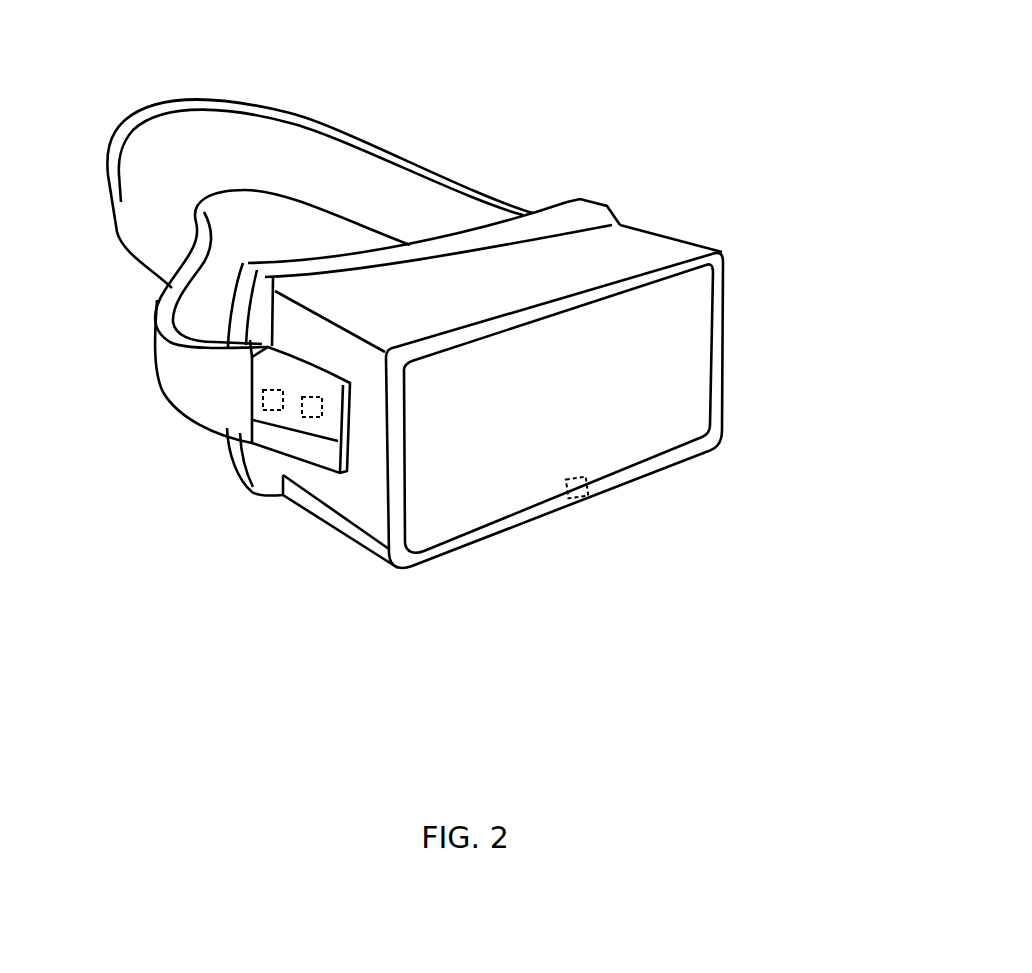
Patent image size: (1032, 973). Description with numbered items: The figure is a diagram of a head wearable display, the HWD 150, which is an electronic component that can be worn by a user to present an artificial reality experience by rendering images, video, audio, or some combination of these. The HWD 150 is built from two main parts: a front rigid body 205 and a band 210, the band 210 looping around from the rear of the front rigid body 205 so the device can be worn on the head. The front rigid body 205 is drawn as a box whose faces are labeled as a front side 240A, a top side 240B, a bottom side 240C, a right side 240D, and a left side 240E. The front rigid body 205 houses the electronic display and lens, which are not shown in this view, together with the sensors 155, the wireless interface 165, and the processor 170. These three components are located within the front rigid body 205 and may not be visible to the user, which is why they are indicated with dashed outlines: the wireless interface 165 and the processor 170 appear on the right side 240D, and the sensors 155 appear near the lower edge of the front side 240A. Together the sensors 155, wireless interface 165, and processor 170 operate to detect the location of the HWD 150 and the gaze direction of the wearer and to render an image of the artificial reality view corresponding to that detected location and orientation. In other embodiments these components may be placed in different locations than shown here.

The HWD 150 is at (36, 43).
The band 210 is at (425, 168).
The front rigid body 205 is at (473, 401).
The front side 240A is at (646, 441).
The top side 240B is at (345, 301).
The bottom side 240C is at (311, 540).
The right side 240D is at (355, 505).
The left side 240E is at (700, 237).
The wireless interface 165 is at (249, 398).
The processor 170 is at (287, 425).
The sensors 155 is at (582, 511).